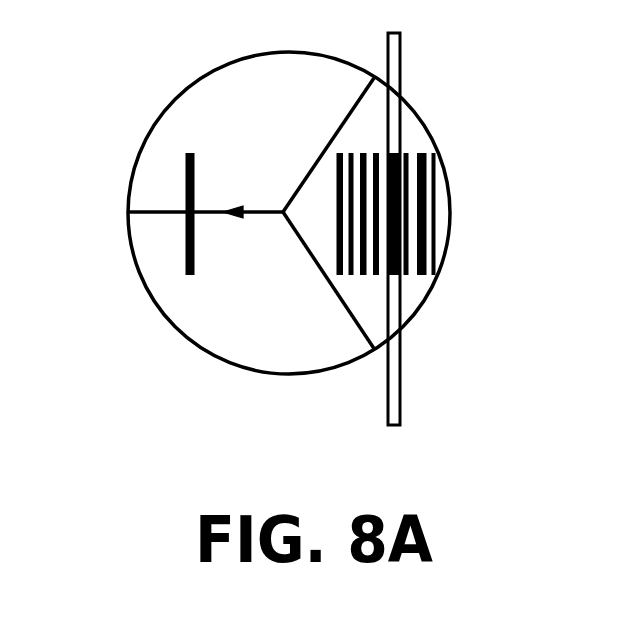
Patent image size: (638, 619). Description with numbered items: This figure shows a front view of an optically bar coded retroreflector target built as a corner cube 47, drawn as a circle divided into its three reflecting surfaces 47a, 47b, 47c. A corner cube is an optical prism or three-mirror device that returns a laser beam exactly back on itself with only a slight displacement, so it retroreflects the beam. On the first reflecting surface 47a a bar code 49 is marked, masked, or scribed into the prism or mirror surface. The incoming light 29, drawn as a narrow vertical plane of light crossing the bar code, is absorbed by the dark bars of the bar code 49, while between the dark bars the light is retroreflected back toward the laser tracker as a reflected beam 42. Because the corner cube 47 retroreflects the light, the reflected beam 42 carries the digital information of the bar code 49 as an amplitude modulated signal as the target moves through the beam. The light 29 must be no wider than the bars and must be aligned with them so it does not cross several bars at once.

The corner cube 47 is at (165, 64).
The first reflecting surface 47a is at (410, 295).
The second reflecting surface 47b is at (284, 72).
The third reflecting surface 47c is at (212, 318).
The reflected beam 42 is at (183, 192).
The bar code 49 is at (437, 173).
The light beam 29 is at (388, 377).